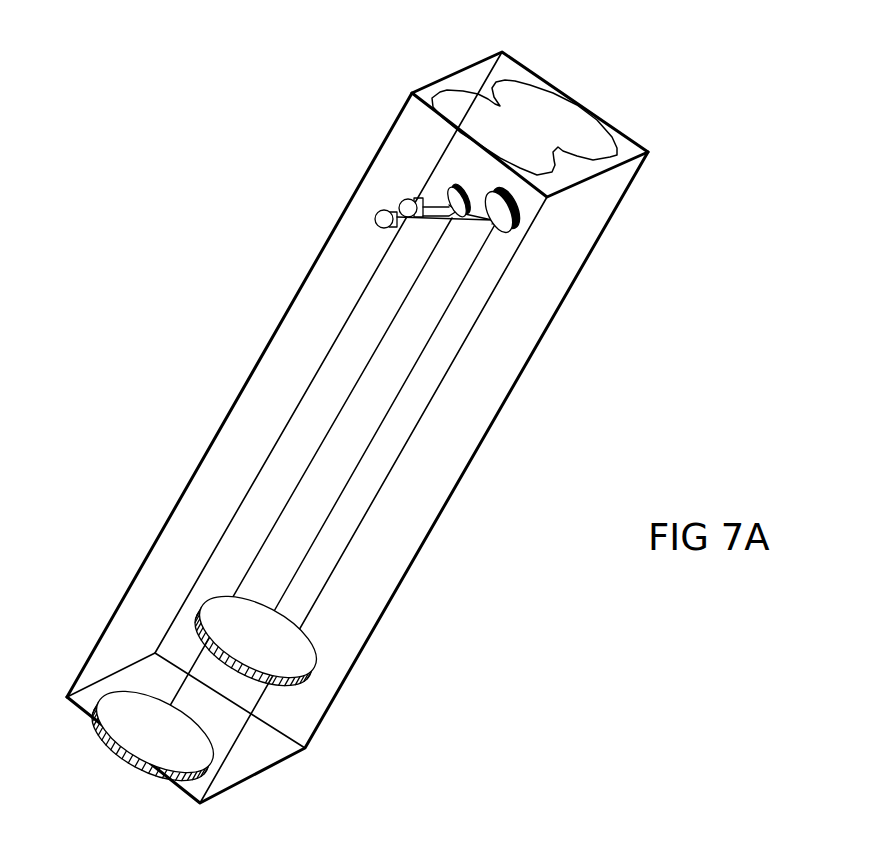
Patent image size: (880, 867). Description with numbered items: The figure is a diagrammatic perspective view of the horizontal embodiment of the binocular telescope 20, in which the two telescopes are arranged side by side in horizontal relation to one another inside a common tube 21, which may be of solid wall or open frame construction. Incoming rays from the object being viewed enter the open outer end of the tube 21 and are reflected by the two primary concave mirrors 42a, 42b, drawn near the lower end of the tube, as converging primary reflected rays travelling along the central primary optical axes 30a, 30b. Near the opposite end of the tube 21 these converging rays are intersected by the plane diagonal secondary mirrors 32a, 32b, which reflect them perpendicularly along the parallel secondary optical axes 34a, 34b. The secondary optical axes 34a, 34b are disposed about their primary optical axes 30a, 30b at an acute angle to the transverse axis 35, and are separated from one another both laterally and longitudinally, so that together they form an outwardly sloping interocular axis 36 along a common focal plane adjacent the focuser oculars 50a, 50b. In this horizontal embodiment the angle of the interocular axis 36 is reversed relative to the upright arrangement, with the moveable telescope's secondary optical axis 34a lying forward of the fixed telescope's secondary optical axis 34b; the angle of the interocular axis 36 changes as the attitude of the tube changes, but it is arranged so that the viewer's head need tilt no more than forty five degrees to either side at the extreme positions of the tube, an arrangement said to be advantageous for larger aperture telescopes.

The sensor housing block 20 is at (176, 473).
The common tube 21 is at (126, 592).
The central primary optical axis 30a is at (312, 383).
The central primary optical axis 30b is at (373, 437).
The plane diagonal secondary mirror 32a is at (456, 190).
The plane diagonal secondary mirror 32b is at (500, 222).
The central secondary optical axis 34a is at (451, 197).
The central secondary optical axis 34b is at (475, 221).
The transverse axis 35 is at (450, 222).
The interocular axis 36 is at (400, 203).
The primary concave mirror 42a is at (160, 723).
The primary concave mirror 42b is at (313, 668).
The focuser ocular 50a is at (404, 203).
The focuser ocular 50b is at (382, 216).